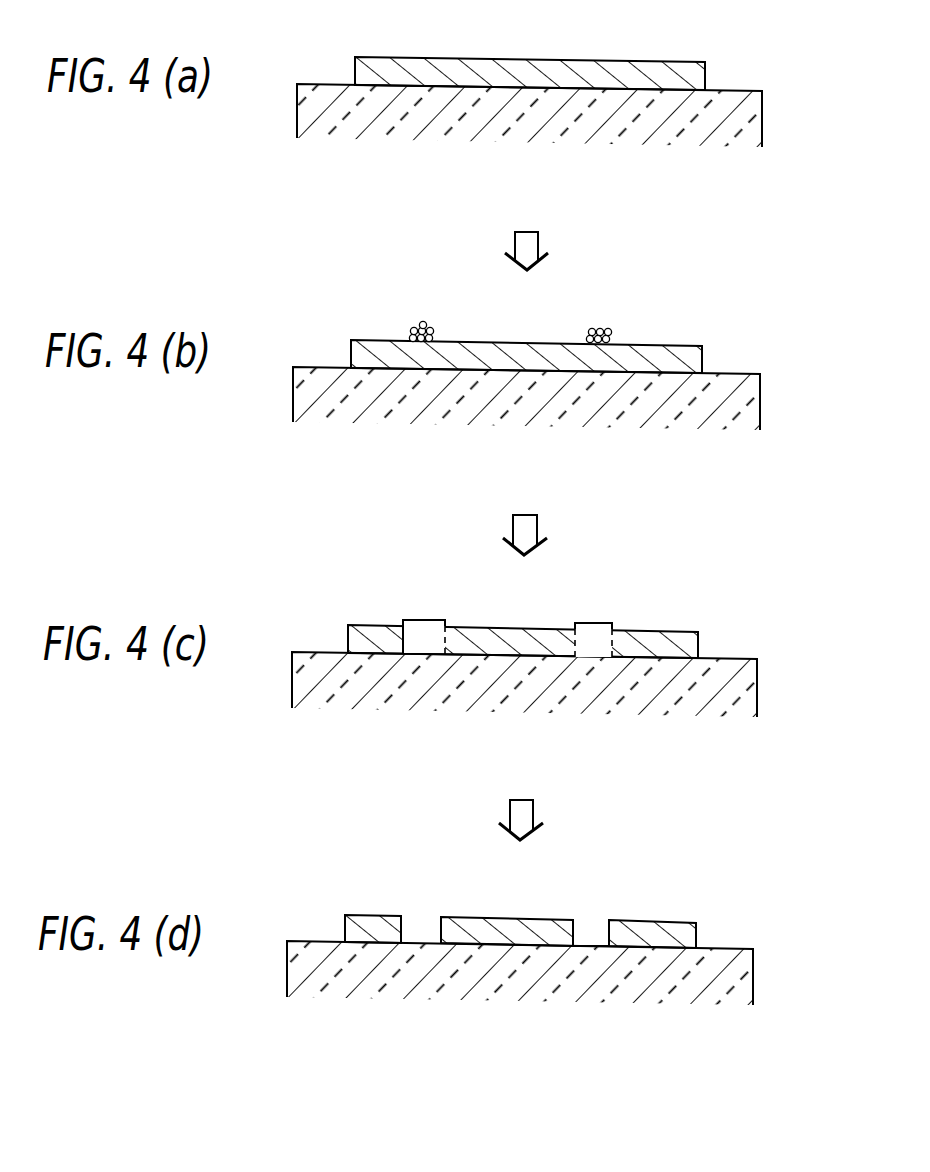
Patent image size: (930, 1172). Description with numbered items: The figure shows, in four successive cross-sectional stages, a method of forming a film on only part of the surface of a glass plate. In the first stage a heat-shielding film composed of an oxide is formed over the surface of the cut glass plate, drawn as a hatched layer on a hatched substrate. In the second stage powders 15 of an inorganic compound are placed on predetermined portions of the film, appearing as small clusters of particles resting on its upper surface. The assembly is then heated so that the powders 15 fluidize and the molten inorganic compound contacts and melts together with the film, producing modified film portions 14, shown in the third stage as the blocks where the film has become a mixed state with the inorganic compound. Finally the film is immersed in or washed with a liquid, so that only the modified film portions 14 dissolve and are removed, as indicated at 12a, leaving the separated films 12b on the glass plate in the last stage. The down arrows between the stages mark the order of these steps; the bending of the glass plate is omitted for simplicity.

The removed film portion 12a is at (591, 932).
The partially formed film 12b is at (374, 915).
The modified film portion 14 is at (612, 623).
The powders of inorganic compound 15 is at (611, 330).